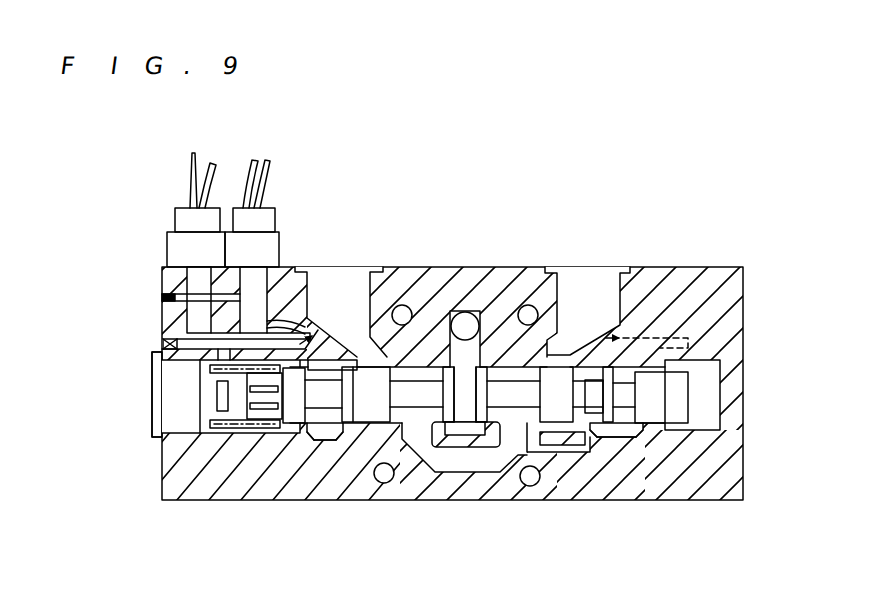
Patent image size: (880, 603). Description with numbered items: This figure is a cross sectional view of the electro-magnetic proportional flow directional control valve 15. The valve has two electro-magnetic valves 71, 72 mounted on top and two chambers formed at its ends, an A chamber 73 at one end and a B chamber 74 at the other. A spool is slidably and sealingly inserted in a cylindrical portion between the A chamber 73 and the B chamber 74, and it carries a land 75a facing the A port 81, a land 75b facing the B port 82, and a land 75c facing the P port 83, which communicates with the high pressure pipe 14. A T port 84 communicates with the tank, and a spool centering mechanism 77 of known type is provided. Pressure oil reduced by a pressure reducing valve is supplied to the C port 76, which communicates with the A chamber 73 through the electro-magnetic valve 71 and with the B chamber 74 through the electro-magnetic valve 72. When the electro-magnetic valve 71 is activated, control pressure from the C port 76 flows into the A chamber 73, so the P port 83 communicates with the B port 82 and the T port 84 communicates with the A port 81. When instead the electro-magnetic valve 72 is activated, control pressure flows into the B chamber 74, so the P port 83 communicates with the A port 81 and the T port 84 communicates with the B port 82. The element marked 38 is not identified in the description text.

The high pressure pipe 14 is at (455, 313).
The electro-magnetic proportional flow directional control valve 15 is at (750, 316).
The plug 38 is at (333, 432).
The electro-magnetic valve 71 is at (277, 243).
The electro-magnetic valve 72 is at (170, 243).
The A chamber 73 is at (716, 398).
The B chamber 74 is at (240, 403).
The land 75a is at (557, 417).
The land 75b is at (375, 414).
The land 75c is at (465, 398).
The C port 76 is at (205, 281).
The spool centering mechanism 77 is at (213, 440).
The A port 81 is at (595, 281).
The B port 82 is at (344, 284).
The P port 83 is at (480, 305).
The T port 84 is at (321, 432).